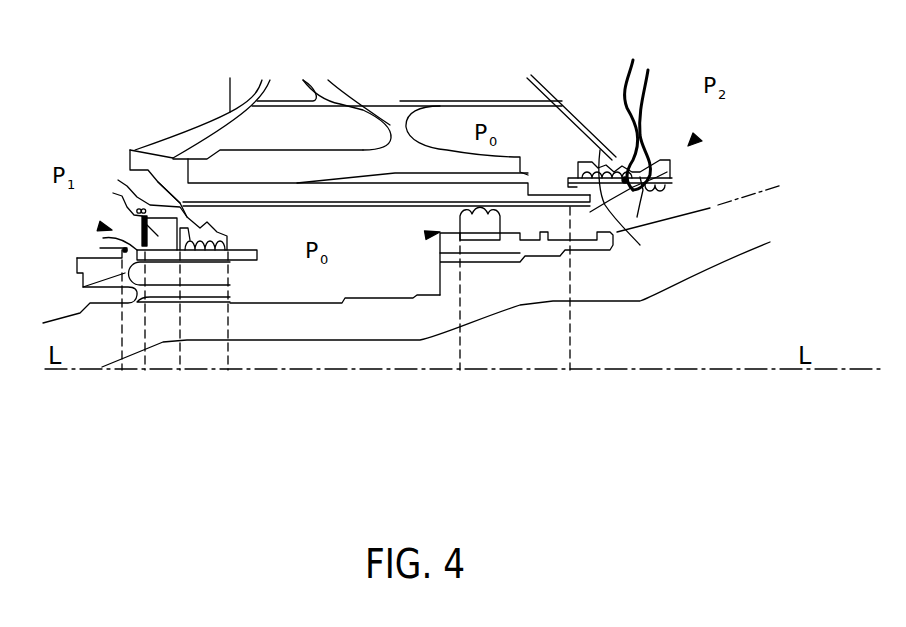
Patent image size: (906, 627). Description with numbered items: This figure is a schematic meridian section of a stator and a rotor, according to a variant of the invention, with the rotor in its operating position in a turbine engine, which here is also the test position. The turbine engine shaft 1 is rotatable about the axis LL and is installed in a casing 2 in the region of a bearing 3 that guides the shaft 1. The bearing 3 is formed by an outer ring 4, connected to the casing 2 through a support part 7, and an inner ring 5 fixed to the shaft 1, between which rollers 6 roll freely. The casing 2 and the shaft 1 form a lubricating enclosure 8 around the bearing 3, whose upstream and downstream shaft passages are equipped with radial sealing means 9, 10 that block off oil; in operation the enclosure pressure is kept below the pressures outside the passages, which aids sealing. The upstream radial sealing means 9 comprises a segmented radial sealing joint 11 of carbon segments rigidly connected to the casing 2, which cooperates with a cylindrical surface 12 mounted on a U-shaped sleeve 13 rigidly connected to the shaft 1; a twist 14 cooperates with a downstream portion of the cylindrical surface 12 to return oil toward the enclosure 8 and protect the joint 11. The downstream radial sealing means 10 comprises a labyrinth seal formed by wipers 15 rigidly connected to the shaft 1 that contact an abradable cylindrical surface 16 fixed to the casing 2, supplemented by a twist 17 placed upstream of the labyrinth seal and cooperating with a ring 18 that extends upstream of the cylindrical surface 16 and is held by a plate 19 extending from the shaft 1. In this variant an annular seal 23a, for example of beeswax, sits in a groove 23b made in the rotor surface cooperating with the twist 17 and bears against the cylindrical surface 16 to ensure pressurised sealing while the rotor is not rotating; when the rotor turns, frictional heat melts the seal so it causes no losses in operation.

The turbine engine shaft 1 is at (638, 303).
The casing 2 is at (390, 121).
The bearing 3 is at (426, 236).
The outer ring 4 is at (537, 200).
The inner ring 5 is at (503, 240).
The rollers 6 is at (453, 212).
The support part 7 is at (508, 196).
The lubricating enclosure 8 is at (358, 220).
The radial sealing means 9 is at (100, 226).
The radial sealing means 10 is at (697, 137).
The segmented radial sealing joint 11 is at (135, 212).
The cylindrical surface 12 is at (103, 238).
The sleeve 13 is at (83, 287).
The twist 14 is at (193, 225).
The wipers 15 is at (643, 200).
The cylindrical surface 16 is at (650, 174).
The twist 17 is at (600, 150).
The ring 18 is at (640, 245).
The plate 19 is at (640, 182).
The annular seal 23a is at (624, 111).
The groove 23b is at (662, 116).